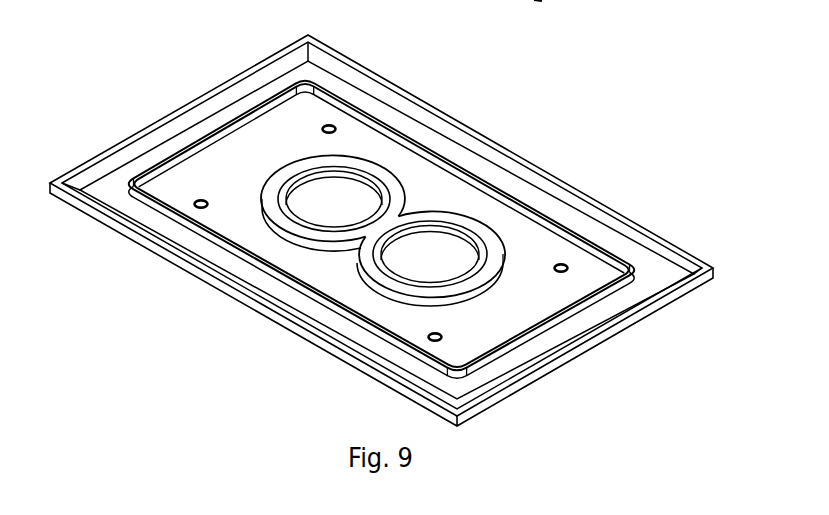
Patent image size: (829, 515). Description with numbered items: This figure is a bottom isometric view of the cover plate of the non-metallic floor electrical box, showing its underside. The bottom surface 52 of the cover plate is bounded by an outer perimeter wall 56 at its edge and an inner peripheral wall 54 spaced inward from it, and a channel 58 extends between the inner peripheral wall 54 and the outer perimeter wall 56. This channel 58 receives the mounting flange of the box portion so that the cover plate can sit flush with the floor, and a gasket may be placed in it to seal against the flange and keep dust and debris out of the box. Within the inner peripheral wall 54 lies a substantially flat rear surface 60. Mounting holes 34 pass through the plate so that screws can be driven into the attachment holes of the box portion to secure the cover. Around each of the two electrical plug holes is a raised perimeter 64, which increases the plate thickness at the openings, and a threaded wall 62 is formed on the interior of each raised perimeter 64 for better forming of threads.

The mounting holes 34 is at (331, 126).
The bottom surface 52 is at (653, 272).
The inner peripheral wall 54 is at (560, 330).
The outer perimeter wall 56 is at (506, 157).
The channel 58 is at (315, 78).
The rear surface 60 is at (476, 331).
The threaded wall 62 is at (374, 168).
The raised perimeter 64 is at (392, 282).